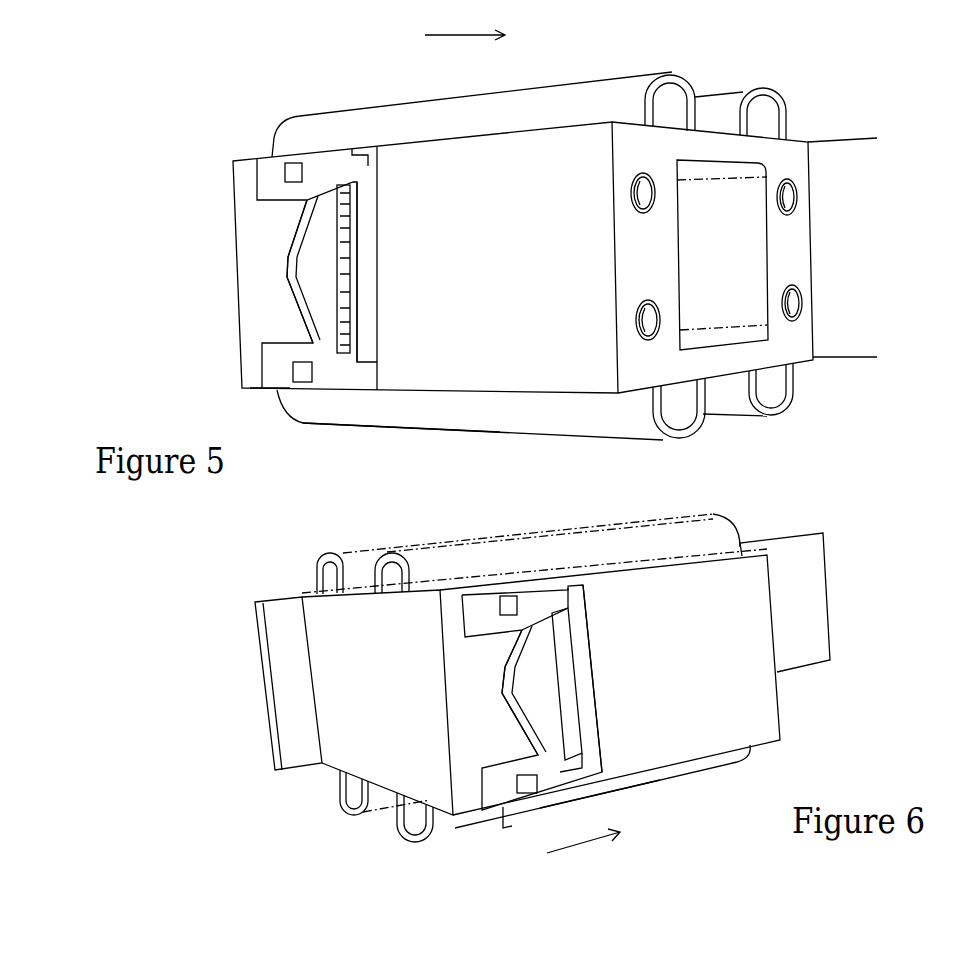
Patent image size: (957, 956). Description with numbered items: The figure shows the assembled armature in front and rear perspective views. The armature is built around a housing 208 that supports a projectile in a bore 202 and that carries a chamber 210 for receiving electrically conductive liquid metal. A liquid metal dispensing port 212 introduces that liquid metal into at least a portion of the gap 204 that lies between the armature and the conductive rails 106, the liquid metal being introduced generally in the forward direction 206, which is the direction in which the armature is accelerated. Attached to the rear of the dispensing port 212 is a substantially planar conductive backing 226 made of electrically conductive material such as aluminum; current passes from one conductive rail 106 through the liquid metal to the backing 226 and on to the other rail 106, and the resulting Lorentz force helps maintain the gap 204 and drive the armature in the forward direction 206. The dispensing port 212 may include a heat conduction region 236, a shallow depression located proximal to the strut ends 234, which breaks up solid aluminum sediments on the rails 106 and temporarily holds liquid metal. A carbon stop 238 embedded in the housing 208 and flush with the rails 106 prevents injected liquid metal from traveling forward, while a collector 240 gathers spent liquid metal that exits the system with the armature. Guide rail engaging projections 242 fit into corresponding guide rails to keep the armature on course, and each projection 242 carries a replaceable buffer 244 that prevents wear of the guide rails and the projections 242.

In FIG. 5, the conductive rail 106 is at (863, 137).
In FIG. 6, the conductive rail 106 is at (830, 572).
In FIG. 5, the bore 202 is at (768, 255).
In FIG. 5, the gap 204 is at (820, 361).
In FIG. 6, the gap 204 is at (325, 771).
In FIG. 5, the forward direction 206 is at (452, 37).
In FIG. 6, the forward direction 206 is at (590, 842).
In FIG. 5, the housing 208 is at (812, 253).
In FIG. 6, the housing 208 is at (782, 708).
In FIG. 5, the chamber 210 is at (637, 213).
In FIG. 5, the liquid metal dispensing port 212 is at (272, 398).
In FIG. 6, the liquid metal dispensing port 212 is at (504, 829).
In FIG. 5, the conductive backing 226 is at (232, 177).
In FIG. 6, the conductive backing 226 is at (452, 820).
In FIG. 5, the strut end 234 is at (330, 391).
In FIG. 6, the strut end 234 is at (555, 775).
In FIG. 5, the heat conduction region 236 is at (333, 272).
In FIG. 6, the heat conduction region 236 is at (556, 696).
In FIG. 5, the stop 238 is at (378, 370).
In FIG. 6, the stop 238 is at (593, 680).
In FIG. 5, the collector 240 is at (348, 362).
In FIG. 6, the collector 240 is at (586, 740).
In FIG. 5, the guide rail engaging projection 242 is at (697, 97).
In FIG. 6, the guide rail engaging projection 242 is at (392, 556).
In FIG. 5, the replaceable buffer 244 is at (690, 85).
In FIG. 6, the replaceable buffer 244 is at (332, 556).